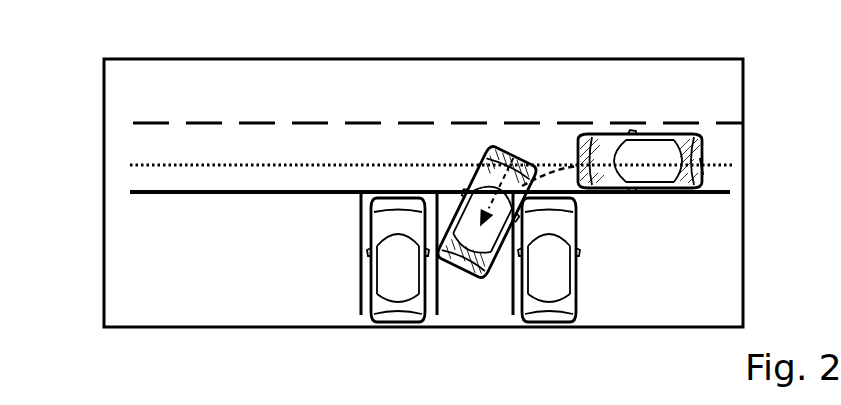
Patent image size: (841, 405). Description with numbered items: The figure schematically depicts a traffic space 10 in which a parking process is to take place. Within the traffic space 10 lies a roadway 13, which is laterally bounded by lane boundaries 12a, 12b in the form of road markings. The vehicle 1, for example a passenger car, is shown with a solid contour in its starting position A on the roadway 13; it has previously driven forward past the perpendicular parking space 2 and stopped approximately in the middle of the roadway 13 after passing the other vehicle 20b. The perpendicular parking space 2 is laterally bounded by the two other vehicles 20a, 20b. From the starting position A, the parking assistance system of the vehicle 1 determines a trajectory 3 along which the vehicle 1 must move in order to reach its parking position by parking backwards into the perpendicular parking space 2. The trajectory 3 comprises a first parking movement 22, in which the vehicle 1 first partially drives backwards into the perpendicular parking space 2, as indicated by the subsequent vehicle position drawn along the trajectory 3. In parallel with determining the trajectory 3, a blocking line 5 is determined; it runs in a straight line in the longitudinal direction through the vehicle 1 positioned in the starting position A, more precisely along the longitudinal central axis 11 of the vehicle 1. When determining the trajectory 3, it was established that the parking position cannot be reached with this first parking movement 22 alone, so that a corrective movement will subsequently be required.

The vehicle 1 is at (645, 135).
The perpendicular parking space 2 is at (471, 298).
The trajectory 3 is at (505, 143).
The parking movement 22 is at (547, 163).
The blocking line 5 is at (192, 165).
The traffic space 10 is at (233, 58).
The longitudinal central axis 11 is at (703, 173).
The lane boundary 12a is at (155, 194).
The lane boundary 12b is at (359, 121).
The roadway 13 is at (210, 156).
The other vehicle 20a is at (396, 283).
The other vehicle 20b is at (547, 280).
The starting position A is at (661, 194).